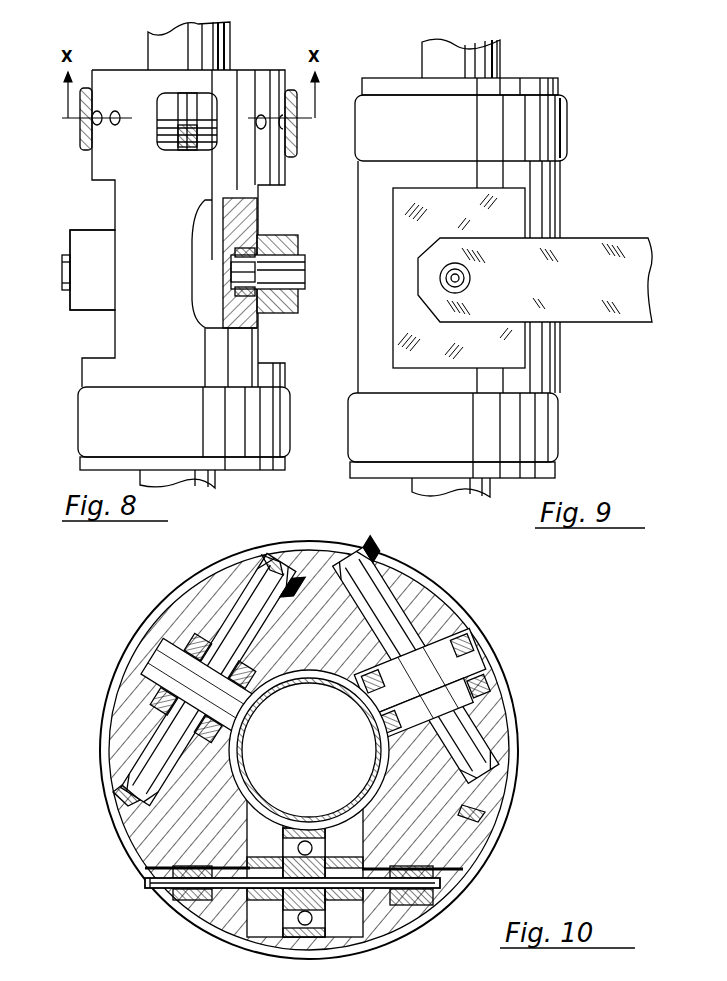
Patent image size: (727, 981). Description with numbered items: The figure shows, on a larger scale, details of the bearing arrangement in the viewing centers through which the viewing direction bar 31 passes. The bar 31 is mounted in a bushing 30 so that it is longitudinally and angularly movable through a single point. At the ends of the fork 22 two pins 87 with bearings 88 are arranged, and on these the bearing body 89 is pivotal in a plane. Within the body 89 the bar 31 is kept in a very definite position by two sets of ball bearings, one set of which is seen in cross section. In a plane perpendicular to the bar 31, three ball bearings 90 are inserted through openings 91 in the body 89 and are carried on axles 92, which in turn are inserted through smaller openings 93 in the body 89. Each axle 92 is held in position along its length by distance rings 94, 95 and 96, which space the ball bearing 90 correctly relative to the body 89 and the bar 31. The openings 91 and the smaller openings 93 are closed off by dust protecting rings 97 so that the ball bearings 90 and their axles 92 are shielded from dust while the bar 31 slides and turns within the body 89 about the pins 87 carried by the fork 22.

In FIG. 8, the fork 22 is at (95, 250).
In FIG. 9, the fork 22 is at (540, 252).
In FIG. 9, the bushing 30 is at (560, 80).
In FIG. 8, the viewing direction bar 31 is at (214, 40).
In FIG. 9, the viewing direction bar 31 is at (437, 265).
In FIG. 10, the viewing direction bar 31 is at (248, 705).
In FIG. 8, the pin 87 is at (64, 254).
In FIG. 9, the pin 87 is at (470, 278).
In FIG. 8, the bearing 88 is at (252, 250).
In FIG. 8, the bearing body 89 is at (246, 316).
In FIG. 10, the bearing body 89 is at (455, 852).
In FIG. 8, the ball bearing 90 is at (187, 112).
In FIG. 10, the ball bearing 90 is at (165, 660).
In FIG. 8, the opening 91 is at (206, 142).
In FIG. 10, the opening 91 is at (455, 630).
In FIG. 10, the axle 92 is at (175, 880).
In FIG. 8, the smaller opening 93 is at (262, 125).
In FIG. 10, the smaller opening 93 is at (488, 818).
In FIG. 10, the distance ring 94 is at (157, 862).
In FIG. 10, the distance ring 95 is at (240, 902).
In FIG. 10, the distance ring 96 is at (290, 858).
In FIG. 8, the dust protecting ring 97 is at (288, 140).
In FIG. 9, the dust protecting ring 97 is at (545, 128).